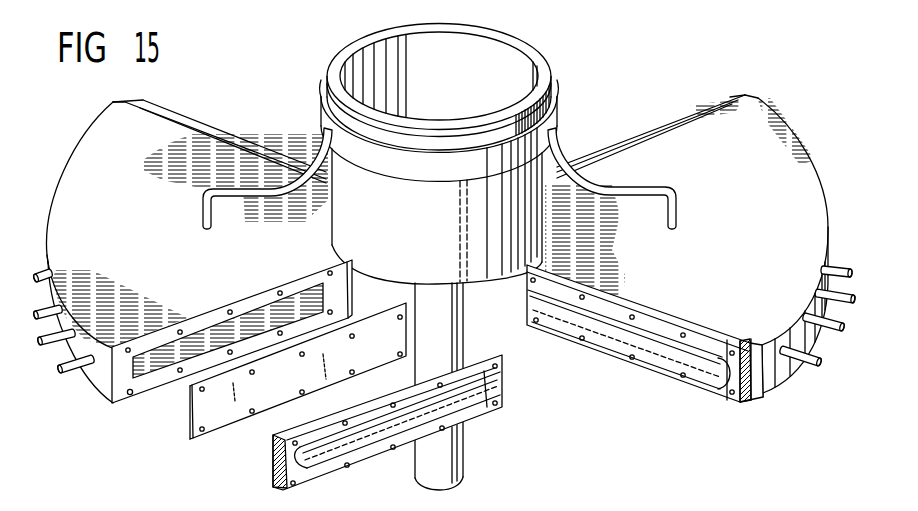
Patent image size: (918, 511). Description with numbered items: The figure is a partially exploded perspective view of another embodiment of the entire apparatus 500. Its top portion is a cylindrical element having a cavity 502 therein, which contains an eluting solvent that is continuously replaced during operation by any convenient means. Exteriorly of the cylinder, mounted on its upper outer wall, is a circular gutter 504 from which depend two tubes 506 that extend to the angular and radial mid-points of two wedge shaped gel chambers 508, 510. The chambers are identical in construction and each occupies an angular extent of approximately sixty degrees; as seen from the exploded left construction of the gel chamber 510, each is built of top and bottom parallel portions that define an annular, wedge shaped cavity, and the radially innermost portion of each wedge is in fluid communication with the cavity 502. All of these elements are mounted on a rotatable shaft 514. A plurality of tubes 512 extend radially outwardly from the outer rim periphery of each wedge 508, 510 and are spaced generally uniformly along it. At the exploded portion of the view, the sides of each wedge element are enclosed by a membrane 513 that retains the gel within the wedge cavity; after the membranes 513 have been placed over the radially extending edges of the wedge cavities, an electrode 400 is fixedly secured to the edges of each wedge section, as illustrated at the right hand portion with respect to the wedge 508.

The apparatus embodiment 500 is at (589, 70).
The cavity 502 is at (509, 53).
The circular gutter 504 is at (553, 131).
The tubes 506 is at (233, 190).
The wedge shaped gel chamber 508 is at (747, 220).
The wedge shaped gel chamber 510 is at (142, 225).
The tubes 512 is at (72, 377).
The membrane 513 is at (223, 418).
The rotatable shaft 514 is at (452, 452).
The electrode 400 is at (373, 436).